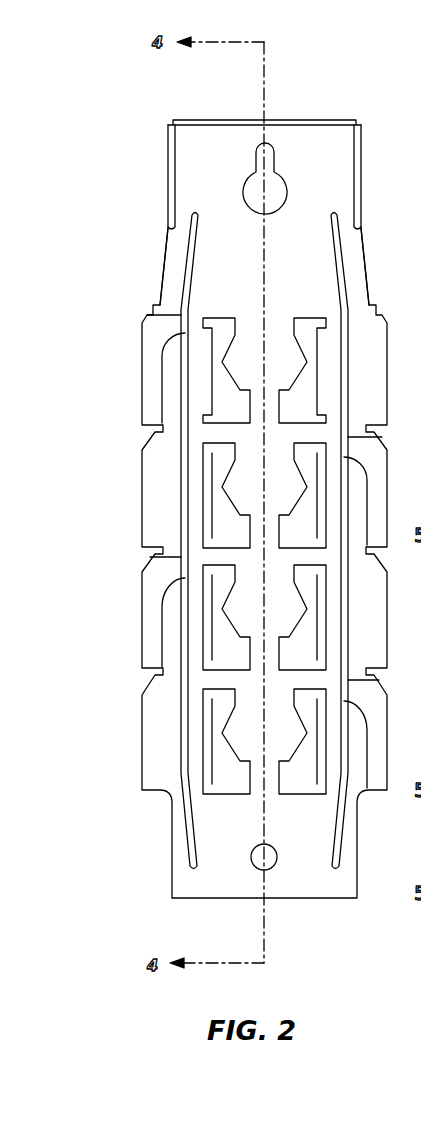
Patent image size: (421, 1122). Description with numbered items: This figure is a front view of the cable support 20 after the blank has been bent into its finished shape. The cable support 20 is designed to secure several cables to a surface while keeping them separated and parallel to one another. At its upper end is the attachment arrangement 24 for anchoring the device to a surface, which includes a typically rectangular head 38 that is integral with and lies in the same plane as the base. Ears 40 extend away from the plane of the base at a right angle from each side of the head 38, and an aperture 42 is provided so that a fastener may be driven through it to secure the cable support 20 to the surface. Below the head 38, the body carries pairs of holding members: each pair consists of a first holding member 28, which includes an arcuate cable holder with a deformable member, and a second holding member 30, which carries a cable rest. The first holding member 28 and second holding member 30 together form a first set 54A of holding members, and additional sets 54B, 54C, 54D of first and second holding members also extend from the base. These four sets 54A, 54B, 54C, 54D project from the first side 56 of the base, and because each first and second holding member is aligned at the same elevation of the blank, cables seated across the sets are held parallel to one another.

The cable support 20 is at (104, 500).
The attachment arrangement 24 is at (118, 194).
The first holding member 28 is at (245, 357).
The second holding member 30 is at (305, 357).
The head 38 is at (337, 153).
The ears 40 is at (315, 120).
The apertures 42 is at (257, 147).
The first set of holding members 54A is at (307, 362).
The additional set of holding members 54B is at (367, 482).
The additional set of holding members 54C is at (158, 587).
The additional set of holding members 54D is at (367, 729).
The first side of the base 56 is at (246, 259).